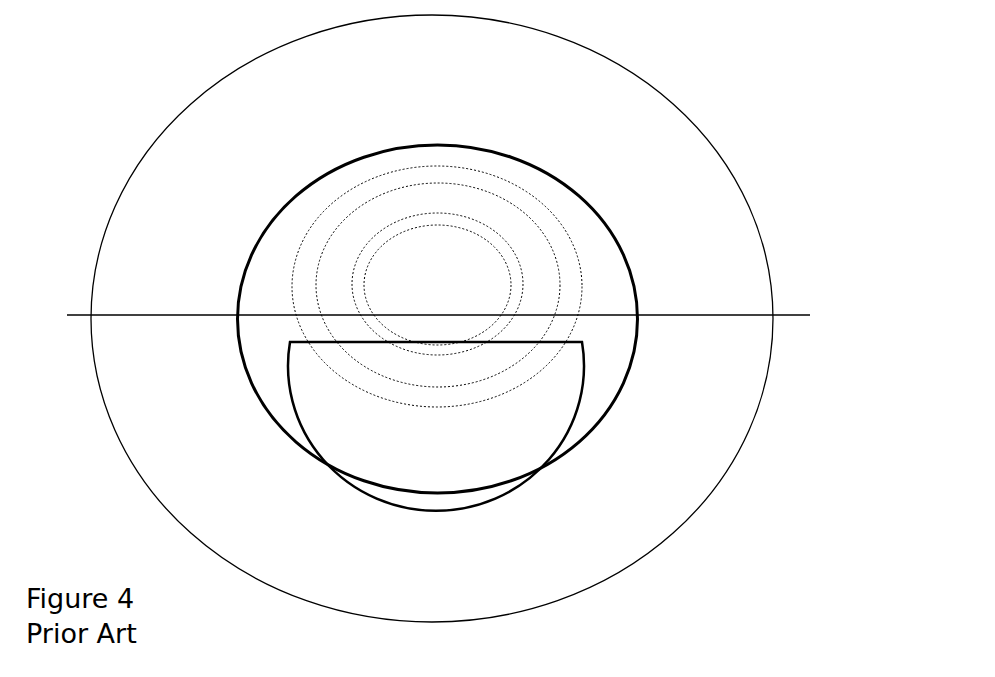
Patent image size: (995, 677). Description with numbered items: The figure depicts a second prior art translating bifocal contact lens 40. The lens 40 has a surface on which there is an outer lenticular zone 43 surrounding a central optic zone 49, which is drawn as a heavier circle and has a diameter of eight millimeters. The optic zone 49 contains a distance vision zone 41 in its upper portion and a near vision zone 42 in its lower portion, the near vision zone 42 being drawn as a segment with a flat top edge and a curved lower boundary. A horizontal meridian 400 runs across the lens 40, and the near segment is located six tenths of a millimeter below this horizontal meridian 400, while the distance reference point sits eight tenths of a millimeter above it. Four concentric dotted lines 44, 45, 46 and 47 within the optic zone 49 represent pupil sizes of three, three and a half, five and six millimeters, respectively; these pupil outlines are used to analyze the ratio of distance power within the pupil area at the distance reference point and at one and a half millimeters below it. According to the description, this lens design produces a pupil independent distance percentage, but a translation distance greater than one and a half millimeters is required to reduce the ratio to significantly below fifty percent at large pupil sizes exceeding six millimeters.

The lens 40 is at (742, 494).
The horizontal meridian 400 is at (799, 323).
The distance vision zone 41 is at (429, 284).
The near vision zone 42 is at (436, 426).
The lenticular zone 43 is at (401, 549).
The dotted line 44 is at (493, 244).
The dotted line 45 is at (515, 252).
The dotted line 46 is at (553, 252).
The dotted line 47 is at (582, 273).
The optic zone 49 is at (635, 293).